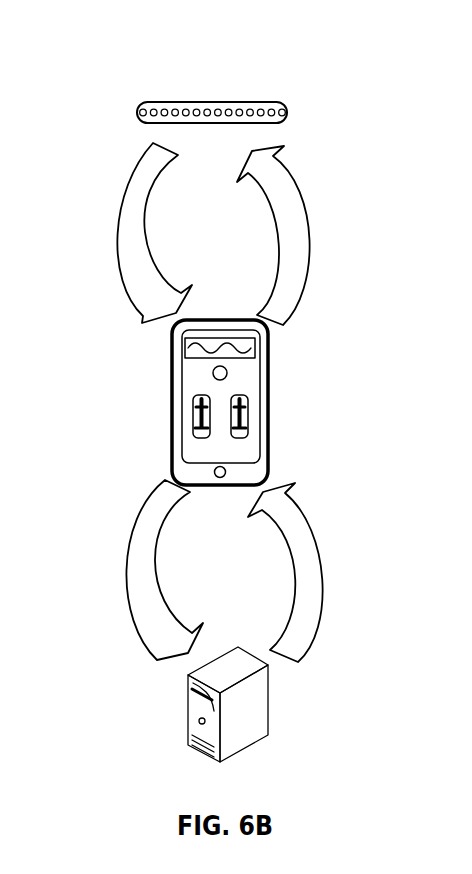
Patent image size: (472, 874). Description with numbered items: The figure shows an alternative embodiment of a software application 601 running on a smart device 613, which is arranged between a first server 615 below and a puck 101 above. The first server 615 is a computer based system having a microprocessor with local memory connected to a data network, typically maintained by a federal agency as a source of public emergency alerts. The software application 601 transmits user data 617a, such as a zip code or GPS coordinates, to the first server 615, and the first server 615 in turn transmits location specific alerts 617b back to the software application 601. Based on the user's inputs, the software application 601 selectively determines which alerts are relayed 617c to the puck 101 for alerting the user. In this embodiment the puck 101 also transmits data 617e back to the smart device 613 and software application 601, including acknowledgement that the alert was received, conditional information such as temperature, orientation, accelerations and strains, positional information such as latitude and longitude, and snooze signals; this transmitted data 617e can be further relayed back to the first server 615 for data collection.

The puck 101 is at (247, 102).
The software application 601 is at (212, 391).
The smart device 613 is at (268, 465).
The first server 615 is at (228, 704).
The user data 617a is at (163, 589).
The location specific alerts 617b is at (303, 513).
The relayed alerts 617c is at (265, 287).
The transmitted data 617e is at (114, 213).